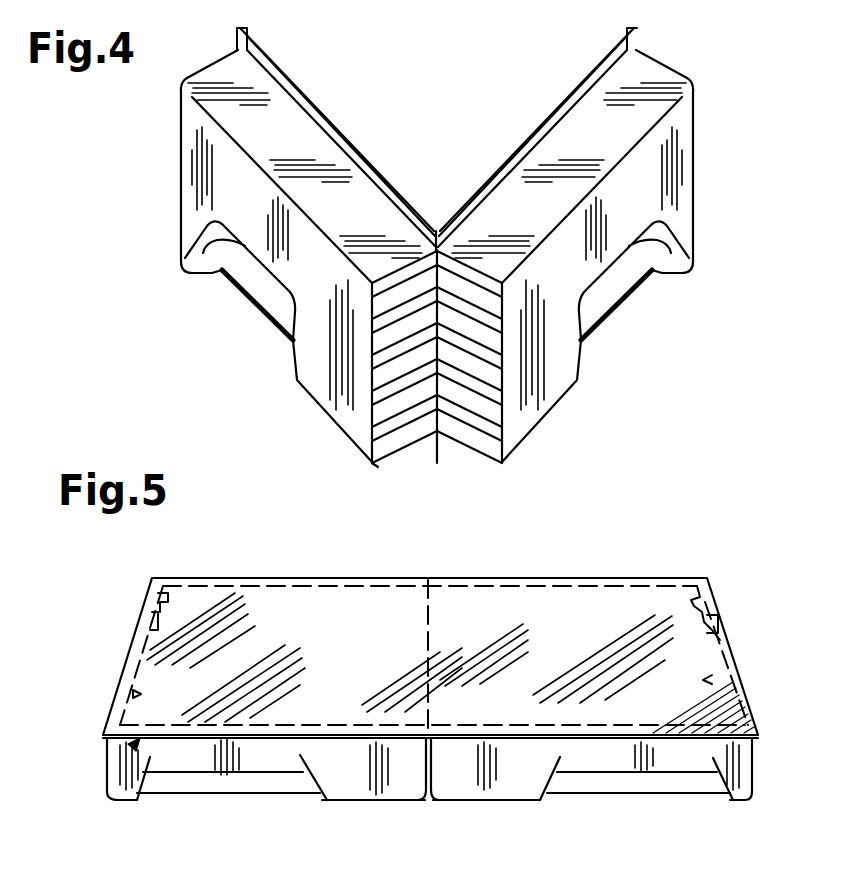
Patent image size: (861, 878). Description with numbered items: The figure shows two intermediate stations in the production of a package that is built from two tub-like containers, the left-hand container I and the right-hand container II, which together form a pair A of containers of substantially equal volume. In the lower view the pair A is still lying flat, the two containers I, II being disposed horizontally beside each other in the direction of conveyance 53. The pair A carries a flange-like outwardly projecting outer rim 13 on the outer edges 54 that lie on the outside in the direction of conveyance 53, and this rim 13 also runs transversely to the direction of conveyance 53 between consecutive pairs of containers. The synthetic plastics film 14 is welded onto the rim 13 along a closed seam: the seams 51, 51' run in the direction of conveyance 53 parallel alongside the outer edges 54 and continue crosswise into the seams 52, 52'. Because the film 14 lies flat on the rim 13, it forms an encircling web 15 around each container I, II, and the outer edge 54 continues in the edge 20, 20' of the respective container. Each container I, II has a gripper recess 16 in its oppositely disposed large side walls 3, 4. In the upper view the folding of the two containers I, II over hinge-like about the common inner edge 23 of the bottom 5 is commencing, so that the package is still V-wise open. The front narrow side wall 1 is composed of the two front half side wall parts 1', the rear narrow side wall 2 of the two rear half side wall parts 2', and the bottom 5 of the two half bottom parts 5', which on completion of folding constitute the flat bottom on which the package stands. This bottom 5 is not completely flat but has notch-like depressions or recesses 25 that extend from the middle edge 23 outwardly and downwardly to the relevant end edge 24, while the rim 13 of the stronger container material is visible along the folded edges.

In FIG. 4, the front narrow side wall 1 is at (410, 277).
In FIG. 4, the front half side wall part 1' is at (423, 142).
In FIG. 4, the large side wall 3 is at (602, 230).
In FIG. 4, the large side wall 4 is at (292, 262).
In FIG. 4, the flange-like outer rim 13 is at (237, 40).
In FIG. 4, the common inner edge 23 is at (425, 345).
In FIG. 5, the common inner edge 23 is at (428, 617).
In FIG. 4, the end edge 24 is at (457, 348).
In FIG. 5, the end edge 24 is at (433, 790).
In FIG. 4, the notch-like depressions or recesses 25 is at (485, 413).
In FIG. 4, the bottom 5 is at (479, 475).
In FIG. 4, the half bottom part 5' is at (419, 492).
In FIG. 4, the pair of containers A is at (163, 178).
In FIG. 5, the synthetic plastics film 14 is at (177, 622).
In FIG. 5, the encircling web 15 is at (138, 742).
In FIG. 5, the gripper recess 16 is at (168, 785).
In FIG. 5, the edge of container 20 is at (266, 789).
In FIG. 5, the edge of container 20' is at (430, 620).
In FIG. 5, the rear narrow side wall 2 is at (516, 812).
In FIG. 5, the rear half side wall part 2' is at (360, 813).
In FIG. 5, the seam 51 is at (738, 646).
In FIG. 5, the seam 51' is at (109, 655).
In FIG. 5, the seam 52 is at (592, 796).
In FIG. 5, the seam 52' is at (417, 615).
In FIG. 5, the direction of conveyance 53 is at (283, 502).
In FIG. 5, the outer edge 54 is at (140, 693).
In FIG. 5, the left-hand container I is at (270, 798).
In FIG. 5, the right-hand container II is at (669, 800).